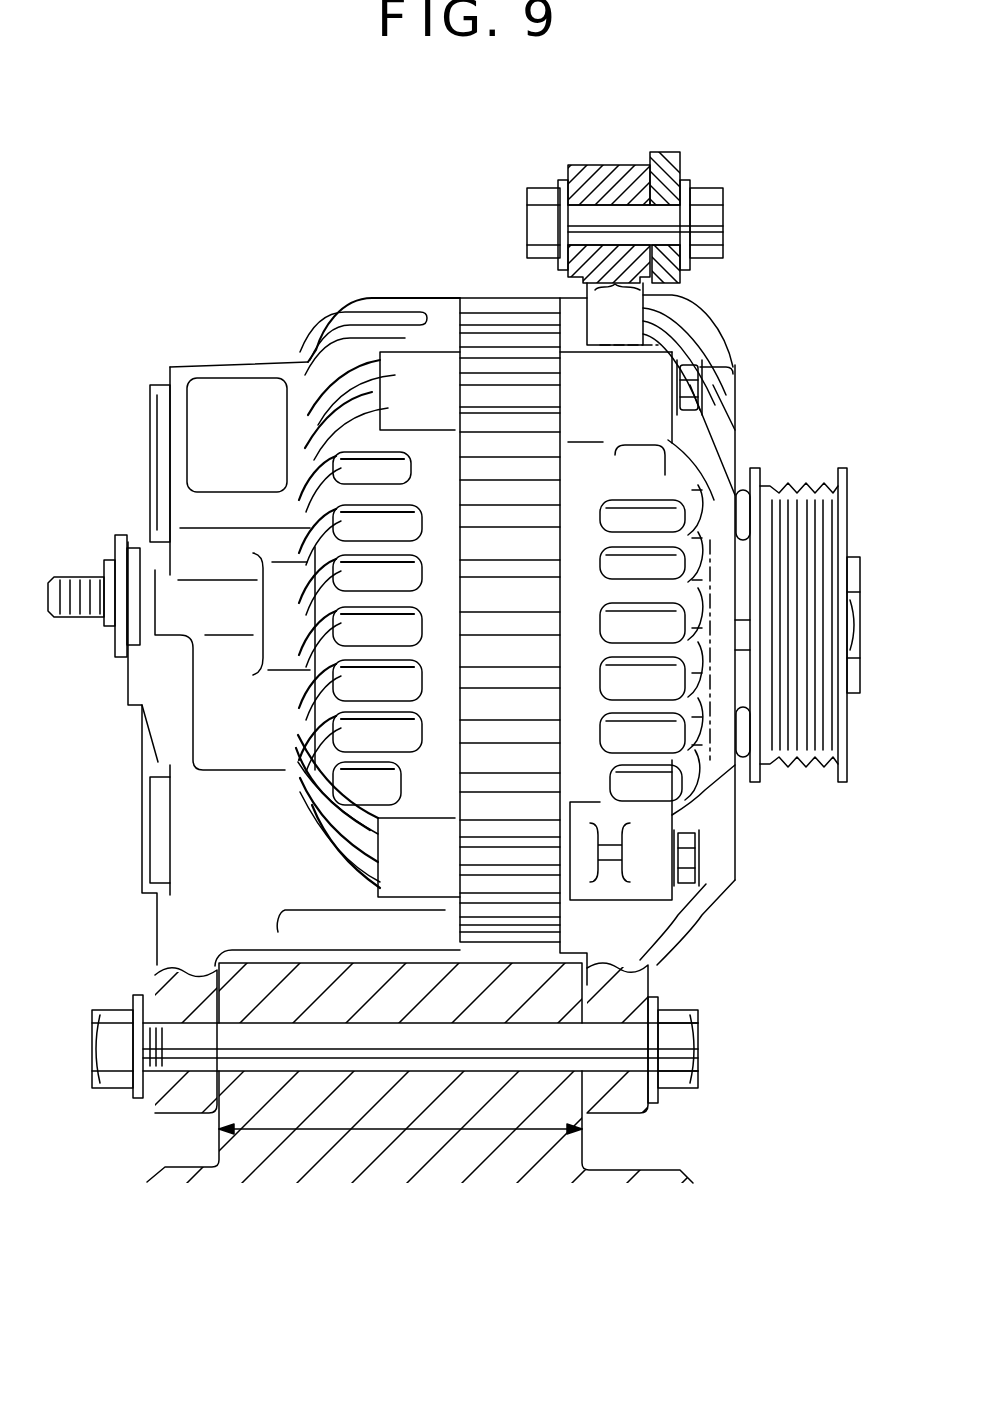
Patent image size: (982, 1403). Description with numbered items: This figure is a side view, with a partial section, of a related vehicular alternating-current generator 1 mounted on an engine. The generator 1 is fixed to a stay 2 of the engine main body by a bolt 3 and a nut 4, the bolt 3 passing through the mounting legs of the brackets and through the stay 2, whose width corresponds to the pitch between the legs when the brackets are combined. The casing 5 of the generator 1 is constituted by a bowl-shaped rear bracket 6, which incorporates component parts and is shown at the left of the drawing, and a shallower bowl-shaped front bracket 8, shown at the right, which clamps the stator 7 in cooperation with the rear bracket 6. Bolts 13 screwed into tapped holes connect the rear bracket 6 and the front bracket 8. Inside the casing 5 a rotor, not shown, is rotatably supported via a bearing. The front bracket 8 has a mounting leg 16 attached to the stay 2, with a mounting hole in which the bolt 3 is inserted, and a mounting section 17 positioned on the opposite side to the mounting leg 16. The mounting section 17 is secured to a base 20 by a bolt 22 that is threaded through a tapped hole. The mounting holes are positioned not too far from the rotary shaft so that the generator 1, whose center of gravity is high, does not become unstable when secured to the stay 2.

The vehicular alternating-current generator 1 is at (454, 570).
The stay 2 is at (480, 1143).
The bolt 3 is at (623, 1052).
The nut 4 is at (115, 1057).
The casing 5 is at (687, 460).
The rear bracket 6 is at (288, 370).
The stator 7 is at (497, 343).
The front bracket 8 is at (720, 368).
The bolt 13 is at (697, 853).
The mounting leg 16 is at (623, 993).
The mounting section 17 is at (618, 320).
The base 20 is at (668, 152).
The bolt 22 is at (705, 185).